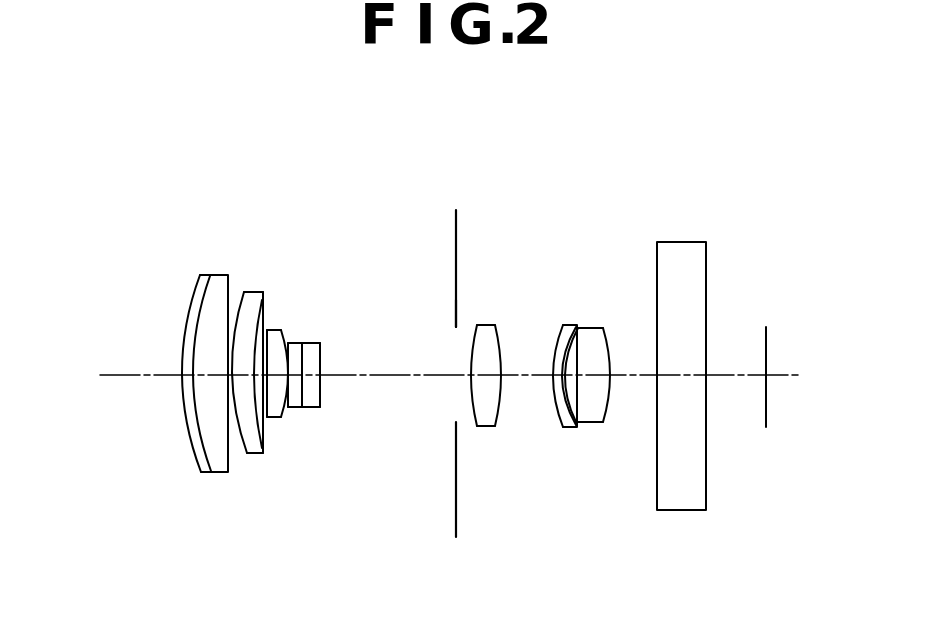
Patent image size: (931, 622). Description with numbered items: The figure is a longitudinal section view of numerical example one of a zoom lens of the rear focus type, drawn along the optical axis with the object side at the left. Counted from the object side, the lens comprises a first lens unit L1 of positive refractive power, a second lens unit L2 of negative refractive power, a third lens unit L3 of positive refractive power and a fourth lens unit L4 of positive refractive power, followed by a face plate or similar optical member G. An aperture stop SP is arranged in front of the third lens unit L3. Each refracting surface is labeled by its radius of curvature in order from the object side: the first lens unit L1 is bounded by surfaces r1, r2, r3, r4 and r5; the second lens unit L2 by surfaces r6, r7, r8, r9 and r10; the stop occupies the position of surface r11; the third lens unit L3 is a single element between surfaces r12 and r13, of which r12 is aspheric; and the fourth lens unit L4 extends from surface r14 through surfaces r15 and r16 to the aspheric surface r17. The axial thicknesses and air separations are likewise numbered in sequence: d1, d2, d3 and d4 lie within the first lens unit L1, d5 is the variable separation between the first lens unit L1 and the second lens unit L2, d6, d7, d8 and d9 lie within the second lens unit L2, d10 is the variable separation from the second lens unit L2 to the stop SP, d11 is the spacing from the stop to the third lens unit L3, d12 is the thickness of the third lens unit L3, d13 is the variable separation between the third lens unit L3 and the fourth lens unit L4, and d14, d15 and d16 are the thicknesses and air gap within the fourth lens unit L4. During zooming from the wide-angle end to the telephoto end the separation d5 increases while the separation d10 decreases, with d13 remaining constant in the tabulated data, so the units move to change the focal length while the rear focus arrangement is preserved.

The first lens unit L1 is at (153, 130).
The second lens unit L2 is at (275, 187).
The third lens unit L3 is at (458, 207).
The fourth lens unit L4 is at (653, 140).
The aperture stop SP is at (456, 262).
The face plate G is at (692, 242).
The first lens surface r1 is at (195, 293).
The second lens surface r2 is at (202, 275).
The third lens surface r3 is at (243, 293).
The fourth lens surface r4 is at (246, 291).
The fifth lens surface r5 is at (268, 328).
The sixth lens surface r6 is at (288, 340).
The seventh lens surface r7 is at (291, 343).
The eighth lens surface r8 is at (301, 343).
The ninth lens surface r9 is at (320, 343).
The tenth lens surface r10 is at (322, 345).
The stop surface r11 is at (435, 241).
The twelfth lens surface r12 is at (467, 325).
The thirteenth lens surface r13 is at (507, 328).
The fourteenth lens surface r14 is at (552, 325).
The fifteenth lens surface r15 is at (587, 325).
The sixteenth lens surface r16 is at (597, 328).
The seventeenth lens surface r17 is at (612, 346).
The first lens thickness d1 is at (188, 425).
The second lens thickness d2 is at (198, 472).
The third air separation d3 is at (211, 470).
The fourth lens thickness d4 is at (227, 472).
The fifth air separation d5 is at (247, 453).
The sixth lens thickness d6 is at (271, 418).
The seventh air separation d7 is at (290, 408).
The eighth lens thickness d8 is at (304, 408).
The ninth lens thickness d9 is at (322, 408).
The tenth air separation d10 is at (375, 385).
The eleventh air separation d11 is at (468, 428).
The twelfth lens thickness d12 is at (488, 428).
The thirteenth air separation d13 is at (540, 428).
The fourteenth lens thickness d14 is at (568, 428).
The fifteenth air separation d15 is at (585, 428).
The sixteenth lens thickness d16 is at (600, 425).